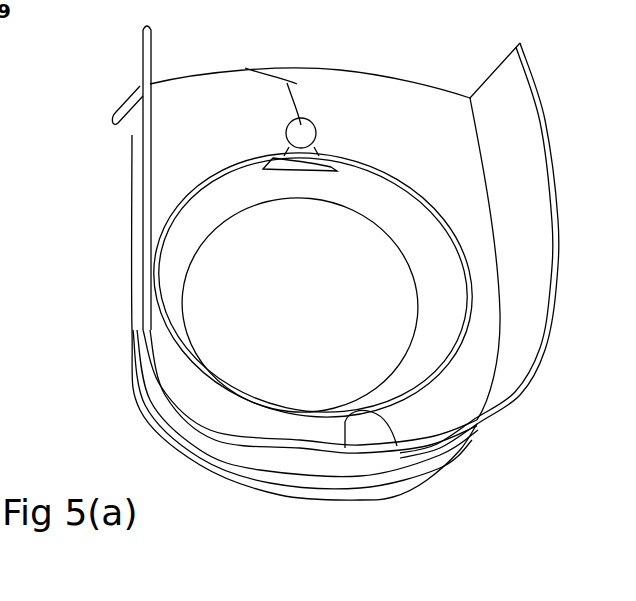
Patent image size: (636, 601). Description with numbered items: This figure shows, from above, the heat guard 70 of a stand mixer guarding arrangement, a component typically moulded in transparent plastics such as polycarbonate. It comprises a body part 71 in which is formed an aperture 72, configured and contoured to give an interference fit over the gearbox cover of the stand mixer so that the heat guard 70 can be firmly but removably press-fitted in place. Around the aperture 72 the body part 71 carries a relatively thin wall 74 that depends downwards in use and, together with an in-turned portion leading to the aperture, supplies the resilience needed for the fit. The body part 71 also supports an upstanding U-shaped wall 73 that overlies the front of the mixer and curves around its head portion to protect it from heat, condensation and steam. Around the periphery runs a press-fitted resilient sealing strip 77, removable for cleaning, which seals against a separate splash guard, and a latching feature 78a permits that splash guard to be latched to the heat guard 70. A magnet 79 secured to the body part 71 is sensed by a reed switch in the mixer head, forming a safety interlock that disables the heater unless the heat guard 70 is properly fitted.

The heat guard 70 is at (480, 486).
The body part 71 is at (390, 123).
The aperture 72 is at (417, 310).
The U-shaped wall 73 is at (510, 136).
The thin wall 74 is at (430, 250).
The resilient sealing strip 77 is at (393, 495).
The latching feature 78a is at (132, 135).
The magnet 79 is at (301, 133).